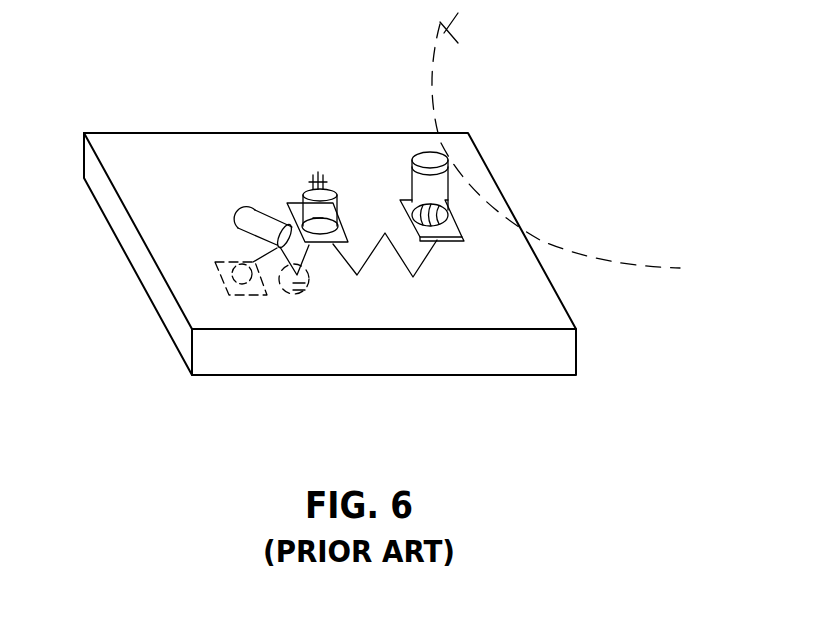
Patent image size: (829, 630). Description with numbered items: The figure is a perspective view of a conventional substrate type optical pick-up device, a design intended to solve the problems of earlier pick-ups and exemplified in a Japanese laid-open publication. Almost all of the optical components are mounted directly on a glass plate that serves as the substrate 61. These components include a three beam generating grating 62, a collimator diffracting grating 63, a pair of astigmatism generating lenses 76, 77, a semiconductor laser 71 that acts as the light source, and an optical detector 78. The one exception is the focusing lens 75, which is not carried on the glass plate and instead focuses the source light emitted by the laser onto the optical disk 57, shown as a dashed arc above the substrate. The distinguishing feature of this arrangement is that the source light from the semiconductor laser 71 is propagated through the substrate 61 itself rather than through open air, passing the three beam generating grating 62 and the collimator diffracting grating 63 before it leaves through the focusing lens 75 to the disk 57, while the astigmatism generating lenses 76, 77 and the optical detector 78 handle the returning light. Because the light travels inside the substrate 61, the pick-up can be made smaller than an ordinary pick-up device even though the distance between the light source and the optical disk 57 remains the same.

The optical disk 57 is at (440, 23).
The substrate 61 is at (143, 146).
The three beam generating grating 62 is at (298, 202).
The collimator diffracting grating 63 is at (433, 243).
The semiconductor laser 71 is at (346, 199).
The focusing lens 75 is at (447, 157).
The astigmatism generating lens 76 is at (288, 288).
The astigmatism generating lens 77 is at (258, 208).
The optical detector 78 is at (220, 282).